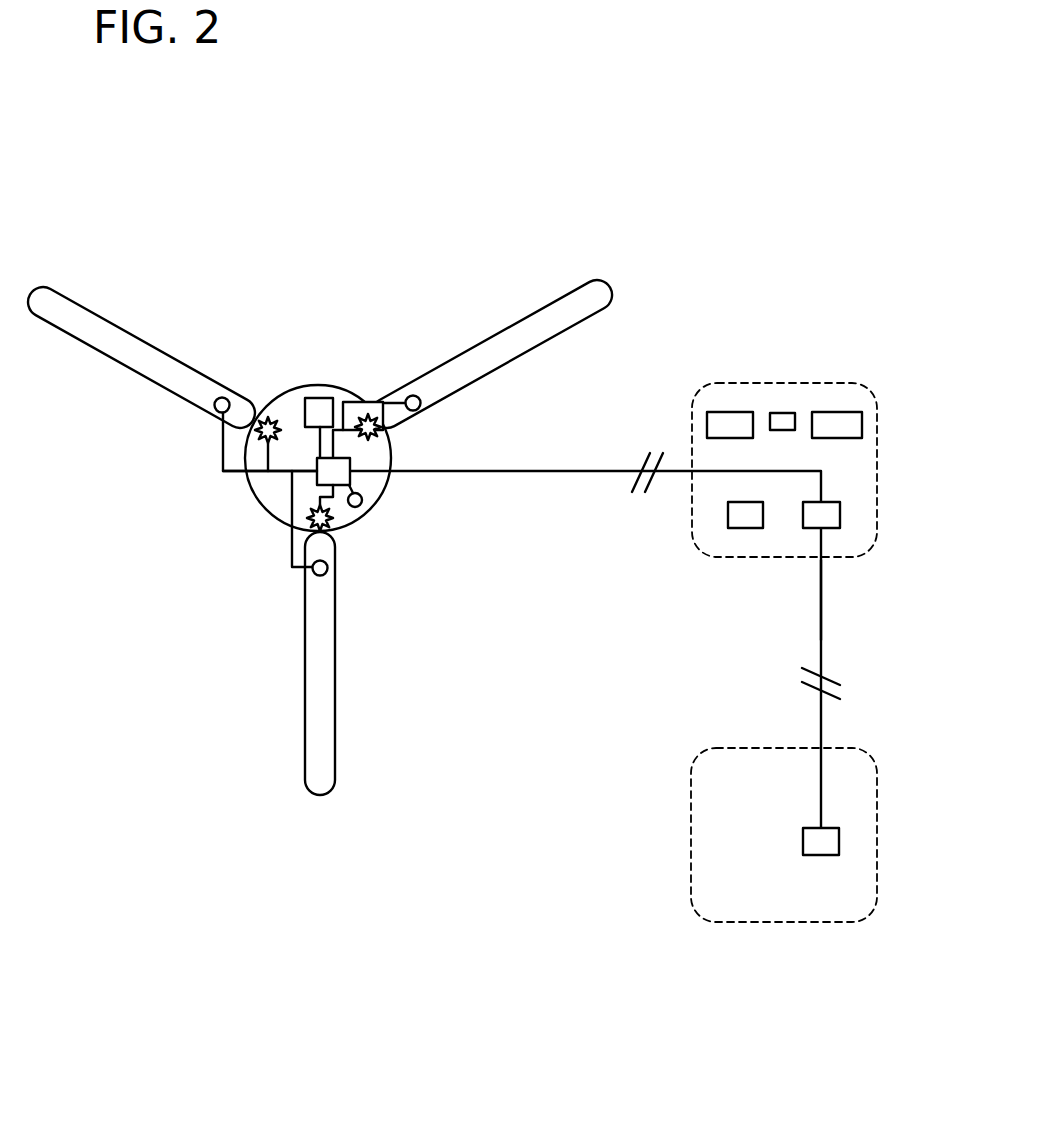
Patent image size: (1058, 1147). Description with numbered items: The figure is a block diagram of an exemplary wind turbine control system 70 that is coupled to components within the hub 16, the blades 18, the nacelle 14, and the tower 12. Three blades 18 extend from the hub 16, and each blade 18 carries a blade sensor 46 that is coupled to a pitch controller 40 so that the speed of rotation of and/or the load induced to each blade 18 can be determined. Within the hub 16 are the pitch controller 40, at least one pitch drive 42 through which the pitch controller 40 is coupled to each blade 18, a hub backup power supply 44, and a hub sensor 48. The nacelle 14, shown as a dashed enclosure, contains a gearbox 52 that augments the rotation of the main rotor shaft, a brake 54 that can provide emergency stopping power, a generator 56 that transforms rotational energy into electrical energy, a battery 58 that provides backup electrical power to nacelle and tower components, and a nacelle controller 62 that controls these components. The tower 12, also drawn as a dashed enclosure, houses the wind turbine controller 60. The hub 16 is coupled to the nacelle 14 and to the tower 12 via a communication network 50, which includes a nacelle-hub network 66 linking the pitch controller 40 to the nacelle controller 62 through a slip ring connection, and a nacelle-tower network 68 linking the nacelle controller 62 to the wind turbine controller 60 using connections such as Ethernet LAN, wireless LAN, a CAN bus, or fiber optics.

The tower 12 is at (833, 922).
The nacelle 14 is at (782, 382).
The hub 16 is at (280, 398).
The blade 18 is at (113, 358).
The pitch controller 40 is at (352, 478).
The pitch drive 42 is at (370, 412).
The hub backup power supply 44 is at (315, 398).
The blade sensor 46 is at (215, 411).
The hub sensor 48 is at (358, 510).
The communication network 50 is at (530, 520).
The gearbox 52 is at (720, 412).
The brake 54 is at (782, 420).
The generator 56 is at (842, 412).
The battery 58 is at (745, 530).
The wind turbine controller 60 is at (803, 840).
The nacelle controller 62 is at (841, 517).
The nacelle-hub network 66 is at (590, 471).
The nacelle-tower network 68 is at (822, 627).
The wind turbine control system 70 is at (108, 148).